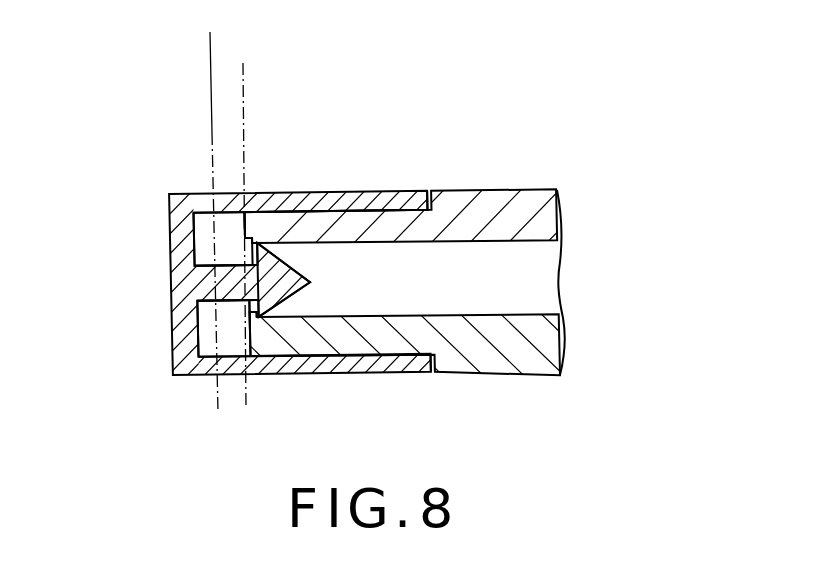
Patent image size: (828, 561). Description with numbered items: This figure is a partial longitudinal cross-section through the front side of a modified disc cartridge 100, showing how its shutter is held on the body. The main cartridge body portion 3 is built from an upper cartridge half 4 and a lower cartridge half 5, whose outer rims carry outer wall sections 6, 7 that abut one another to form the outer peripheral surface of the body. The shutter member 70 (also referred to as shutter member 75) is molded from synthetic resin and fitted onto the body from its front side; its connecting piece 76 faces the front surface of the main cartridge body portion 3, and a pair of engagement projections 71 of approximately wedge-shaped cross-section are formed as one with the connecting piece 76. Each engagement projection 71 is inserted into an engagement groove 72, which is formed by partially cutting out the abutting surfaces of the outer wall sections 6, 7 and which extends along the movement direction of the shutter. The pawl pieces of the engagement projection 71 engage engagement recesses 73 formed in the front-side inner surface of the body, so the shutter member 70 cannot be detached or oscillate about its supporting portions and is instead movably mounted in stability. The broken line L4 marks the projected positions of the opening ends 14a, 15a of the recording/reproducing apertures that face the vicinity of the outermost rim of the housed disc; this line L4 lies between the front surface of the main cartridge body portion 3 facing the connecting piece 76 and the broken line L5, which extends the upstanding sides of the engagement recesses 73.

The disc cartridge 100 is at (660, 128).
The main cartridge body portion 3 is at (637, 210).
The upper cartridge half 4 is at (548, 222).
The lower cartridge half 5 is at (550, 337).
The outer wall section 6 is at (207, 187).
The outer wall section 7 is at (200, 358).
The opening end 14a is at (215, 192).
The opening end 15a is at (222, 340).
The shutter member 70 is at (175, 270).
The engagement projection 71 is at (310, 283).
The engagement groove 72 is at (205, 287).
The engagement recess 73 is at (250, 232).
The shutter member 75 is at (392, 193).
The connecting piece 76 is at (195, 322).
The broken line L4 is at (210, 43).
The broken line L5 is at (243, 93).